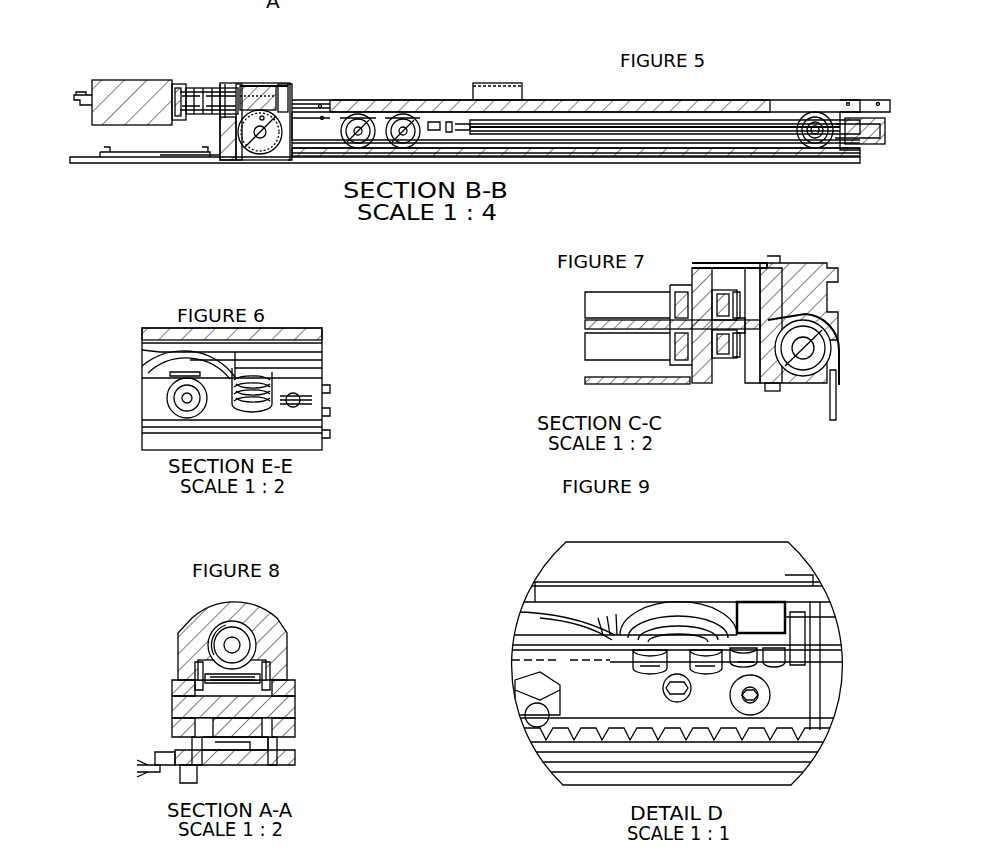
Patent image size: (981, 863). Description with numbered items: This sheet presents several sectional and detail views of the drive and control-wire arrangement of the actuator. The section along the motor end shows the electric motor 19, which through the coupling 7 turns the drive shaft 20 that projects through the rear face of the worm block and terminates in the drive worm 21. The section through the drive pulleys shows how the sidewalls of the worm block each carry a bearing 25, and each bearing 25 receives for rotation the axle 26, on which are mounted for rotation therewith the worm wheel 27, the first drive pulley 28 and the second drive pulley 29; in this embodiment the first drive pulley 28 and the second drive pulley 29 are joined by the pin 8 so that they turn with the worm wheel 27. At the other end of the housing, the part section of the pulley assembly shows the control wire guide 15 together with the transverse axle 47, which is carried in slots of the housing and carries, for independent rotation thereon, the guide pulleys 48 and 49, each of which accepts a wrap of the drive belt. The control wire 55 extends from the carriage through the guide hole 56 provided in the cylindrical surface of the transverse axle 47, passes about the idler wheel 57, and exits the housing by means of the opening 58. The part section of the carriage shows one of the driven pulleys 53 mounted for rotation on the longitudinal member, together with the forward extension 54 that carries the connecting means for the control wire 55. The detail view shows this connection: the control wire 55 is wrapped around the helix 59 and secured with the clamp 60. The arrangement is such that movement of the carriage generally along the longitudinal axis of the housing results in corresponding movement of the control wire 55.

In FIG. 5, the coupling 7 is at (198, 92).
In FIG. 8, the pin 8 is at (272, 638).
In FIG. 7, the control wire guide 15 is at (790, 285).
In FIG. 5, the electric motor 19 is at (137, 76).
In FIG. 5, the drive shaft 20 is at (249, 92).
In FIG. 5, the drive worm 21 is at (280, 91).
In FIG. 8, the bearing 25 is at (170, 693).
In FIG. 8, the axle 26 is at (300, 706).
In FIG. 8, the worm wheel 27 is at (253, 760).
In FIG. 8, the first drive pulley 28 is at (192, 674).
In FIG. 8, the second drive pulley 29 is at (274, 672).
In FIG. 7, the transverse axle 47 is at (691, 268).
In FIG. 7, the guide pulley 48 is at (730, 366).
In FIG. 7, the guide pulley 49 is at (739, 320).
In FIG. 6, the driven pulley 53 is at (168, 358).
In FIG. 6, the forward extension 54 is at (324, 358).
In FIG. 5, the control wire 55 is at (527, 128).
In FIG. 7, the control wire 55 is at (600, 322).
In FIG. 9, the control wire 55 is at (690, 600).
In FIG. 7, the guide hole 56 is at (712, 314).
In FIG. 7, the idler wheel 57 is at (831, 362).
In FIG. 7, the opening 58 is at (840, 388).
In FIG. 9, the helix 59 is at (645, 606).
In FIG. 9, the clamp 60 is at (758, 600).